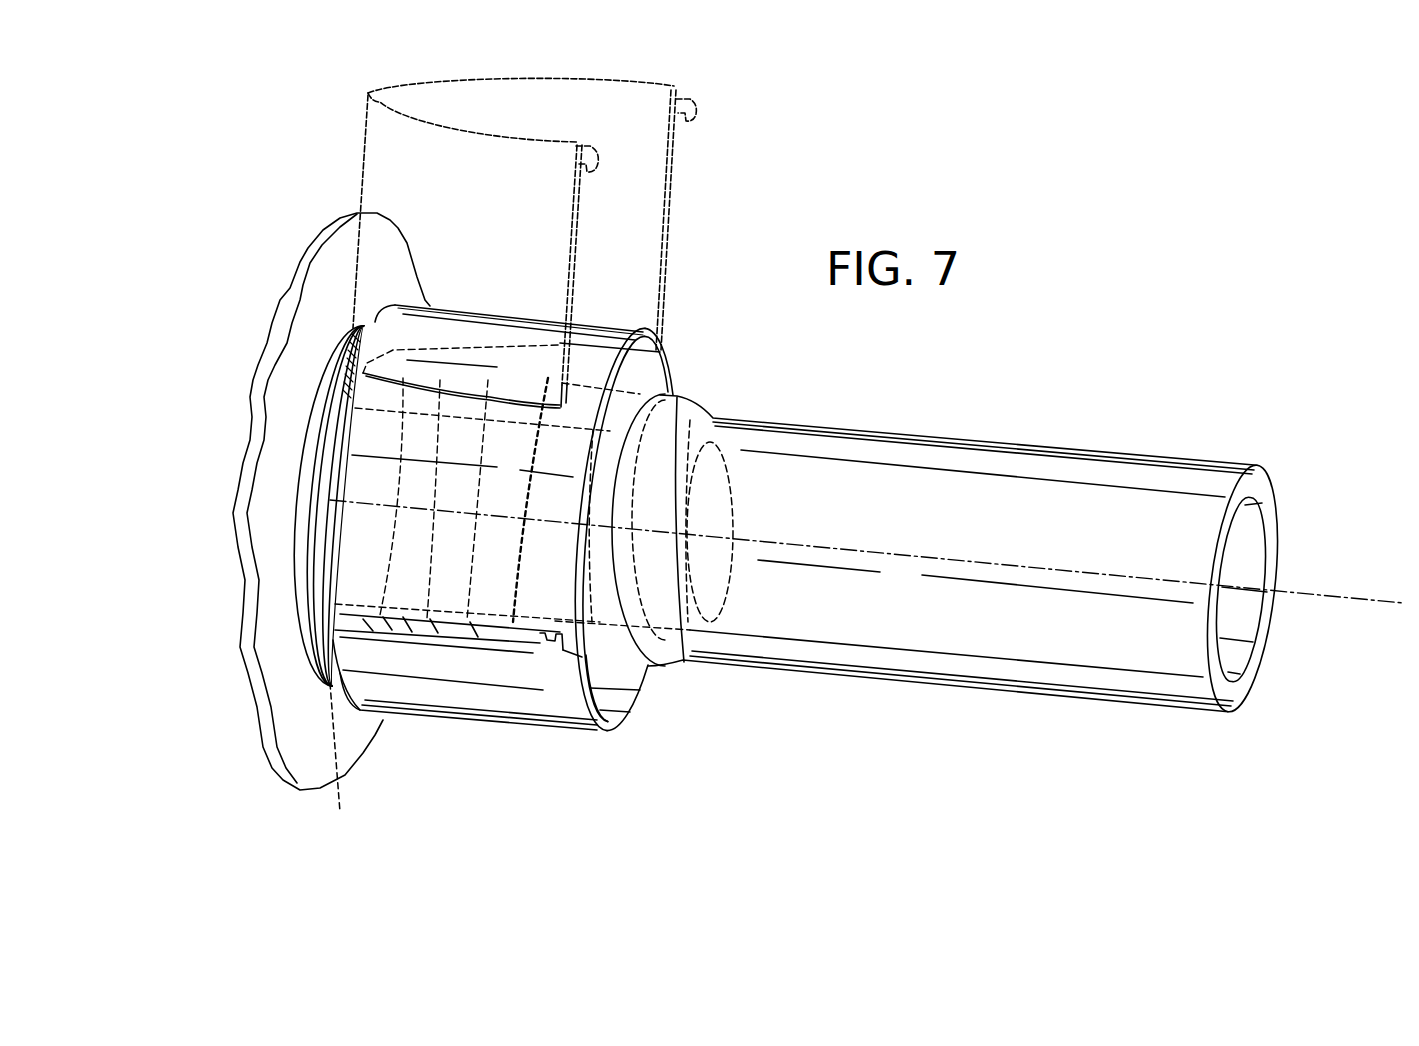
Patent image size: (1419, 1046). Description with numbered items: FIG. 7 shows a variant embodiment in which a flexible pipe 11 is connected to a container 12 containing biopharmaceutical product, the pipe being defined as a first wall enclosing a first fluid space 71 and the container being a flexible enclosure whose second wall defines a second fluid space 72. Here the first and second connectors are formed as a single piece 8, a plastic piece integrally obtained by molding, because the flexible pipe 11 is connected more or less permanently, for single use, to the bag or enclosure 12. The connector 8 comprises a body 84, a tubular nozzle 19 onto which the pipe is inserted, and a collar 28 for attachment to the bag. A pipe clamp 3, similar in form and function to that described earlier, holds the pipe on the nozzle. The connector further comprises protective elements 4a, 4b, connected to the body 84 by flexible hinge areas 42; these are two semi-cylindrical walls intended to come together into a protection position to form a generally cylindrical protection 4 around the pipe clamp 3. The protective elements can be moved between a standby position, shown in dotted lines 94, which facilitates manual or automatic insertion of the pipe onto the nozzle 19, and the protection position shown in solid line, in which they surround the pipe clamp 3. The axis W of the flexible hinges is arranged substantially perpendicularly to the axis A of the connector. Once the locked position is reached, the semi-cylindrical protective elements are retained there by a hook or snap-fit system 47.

The pipe clamp 3 is at (497, 640).
The protective element assembly 4 is at (697, 343).
The protective element 4a is at (471, 293).
The protective element 4b is at (421, 733).
The single-piece connector 8 is at (269, 555).
The flexible pipe 11 is at (1022, 420).
The container 12 is at (284, 734).
The tubular nozzle 19 is at (695, 410).
The collar 28 is at (331, 352).
The flexible hinge areas 42 is at (333, 387).
The hook or snap-fit system 47 is at (533, 625).
The first fluid space 71 is at (1248, 555).
The second fluid space 72 is at (219, 457).
The body 84 is at (339, 767).
The standby position 94 is at (673, 197).
The axis of the flexible hinges W is at (361, 307).
The axis of the connector A is at (1363, 600).